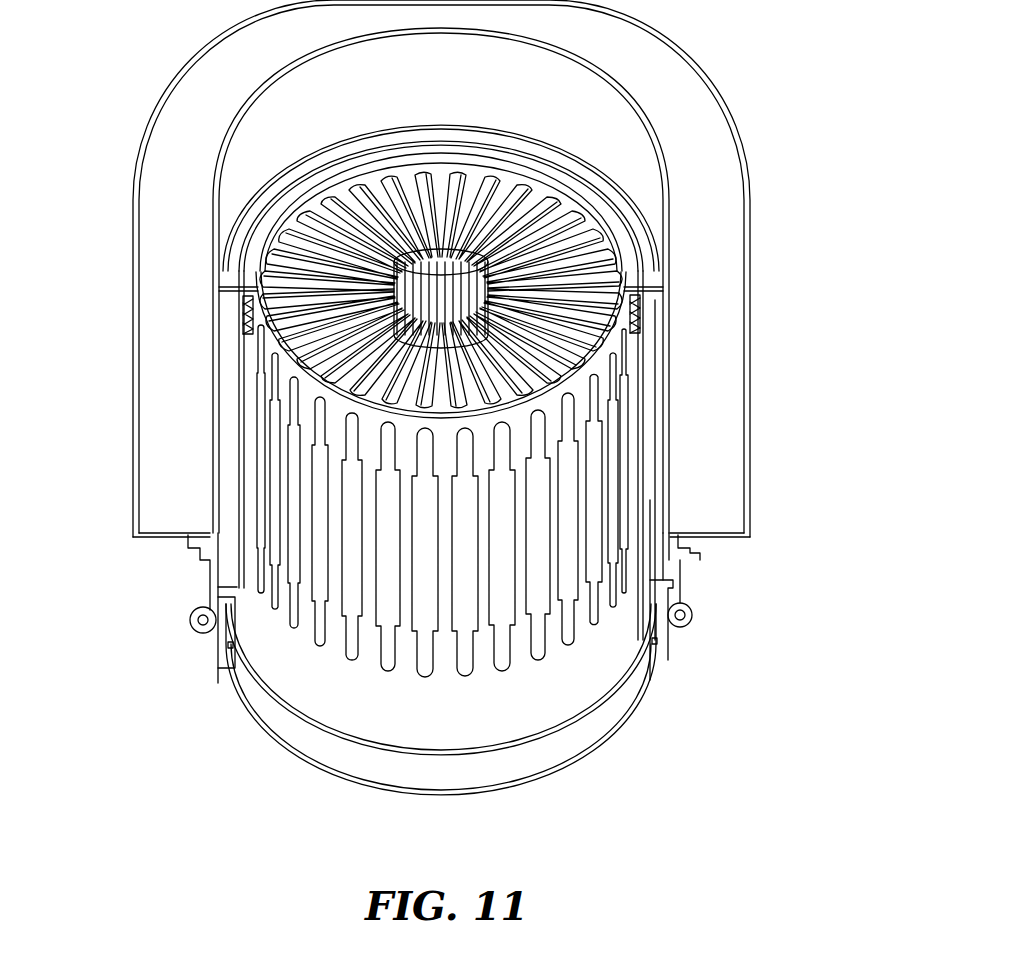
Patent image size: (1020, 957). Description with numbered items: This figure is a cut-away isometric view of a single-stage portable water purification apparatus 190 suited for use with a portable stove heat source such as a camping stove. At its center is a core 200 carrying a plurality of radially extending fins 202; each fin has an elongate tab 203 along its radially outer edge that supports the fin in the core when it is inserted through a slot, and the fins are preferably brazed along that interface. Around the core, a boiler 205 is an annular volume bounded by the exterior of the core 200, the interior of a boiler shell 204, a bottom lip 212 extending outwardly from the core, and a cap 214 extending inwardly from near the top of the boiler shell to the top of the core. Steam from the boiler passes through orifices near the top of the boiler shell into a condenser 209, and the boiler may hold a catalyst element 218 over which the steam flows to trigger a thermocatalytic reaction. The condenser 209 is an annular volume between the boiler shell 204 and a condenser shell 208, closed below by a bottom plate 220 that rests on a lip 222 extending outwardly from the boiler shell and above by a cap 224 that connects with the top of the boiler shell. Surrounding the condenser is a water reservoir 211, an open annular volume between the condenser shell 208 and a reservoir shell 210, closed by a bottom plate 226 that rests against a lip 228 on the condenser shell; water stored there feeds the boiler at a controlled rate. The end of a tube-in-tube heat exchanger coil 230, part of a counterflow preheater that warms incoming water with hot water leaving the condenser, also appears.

The single-stage portable water purification apparatus 190 is at (160, 808).
The core 200 is at (553, 693).
The radially extending fins 202 is at (643, 284).
The elongate tab 203 is at (427, 672).
The boiler shell 204 is at (648, 470).
The boiler 205 is at (668, 392).
The condenser shell 208 is at (243, 328).
The condenser 209 is at (223, 298).
The reservoir shell 210 is at (134, 256).
The water reservoir 211 is at (746, 295).
The bottom lip 212 is at (295, 723).
The cap 214 is at (630, 272).
The catalyst element 218 is at (250, 335).
The bottom plate 220 is at (684, 612).
The lip 222 is at (662, 592).
The cap 224 is at (660, 290).
The bottom plate 226 is at (186, 540).
The lip 228 is at (198, 612).
The tube-in-tube heat exchanger coil 230 is at (230, 648).